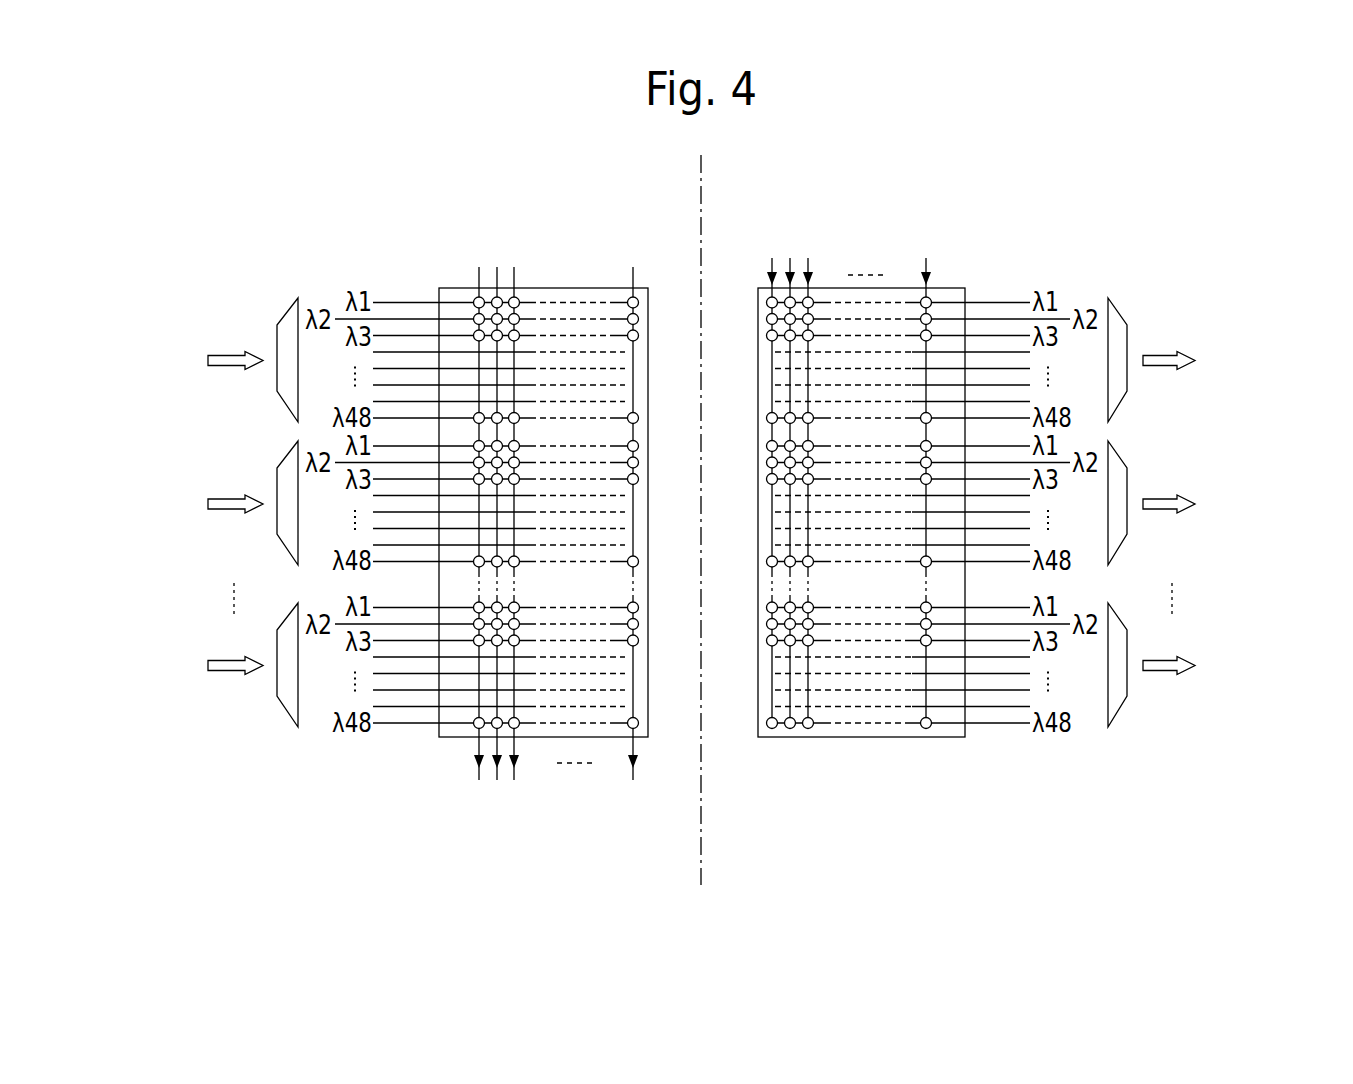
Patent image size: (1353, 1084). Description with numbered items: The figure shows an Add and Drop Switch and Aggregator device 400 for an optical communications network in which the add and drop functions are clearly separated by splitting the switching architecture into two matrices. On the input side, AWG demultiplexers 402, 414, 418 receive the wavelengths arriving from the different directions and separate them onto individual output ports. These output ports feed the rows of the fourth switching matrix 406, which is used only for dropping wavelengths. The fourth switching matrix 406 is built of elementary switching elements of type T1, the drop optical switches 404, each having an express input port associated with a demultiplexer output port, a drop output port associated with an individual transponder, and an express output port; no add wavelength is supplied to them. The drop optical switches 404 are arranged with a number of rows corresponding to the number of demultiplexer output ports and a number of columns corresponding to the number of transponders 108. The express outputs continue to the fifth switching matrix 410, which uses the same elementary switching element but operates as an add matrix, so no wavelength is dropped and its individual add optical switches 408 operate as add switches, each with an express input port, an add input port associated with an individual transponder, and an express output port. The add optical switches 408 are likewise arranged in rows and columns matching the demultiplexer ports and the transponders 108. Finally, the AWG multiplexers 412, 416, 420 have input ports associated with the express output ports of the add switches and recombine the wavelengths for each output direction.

The Add and Drop Switch and Aggregator device 400 is at (1065, 833).
The AWG demux 402 is at (285, 391).
The AWG demux 414 is at (285, 534).
The AWG demux 418 is at (285, 696).
The AWG Mux 412 is at (1120, 389).
The AWG Mux 416 is at (1120, 533).
The AWG Mux 420 is at (1120, 694).
The drop optical switches 404 is at (477, 297).
The fourth switching matrix 406 is at (600, 292).
The fifth switching matrix 410 is at (948, 292).
The add optical switches 408 is at (766, 416).
The transponders 108 is at (947, 192).